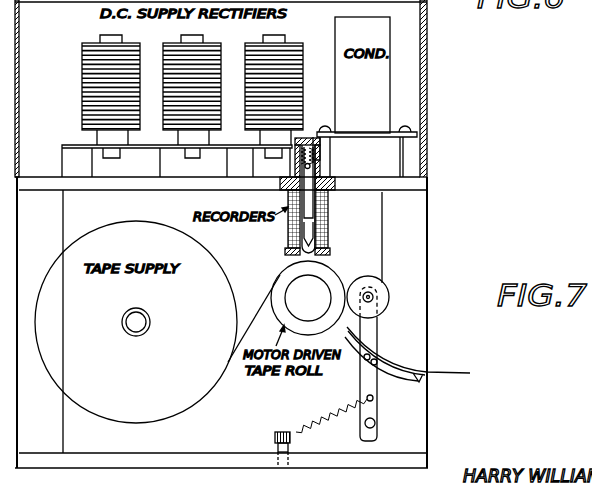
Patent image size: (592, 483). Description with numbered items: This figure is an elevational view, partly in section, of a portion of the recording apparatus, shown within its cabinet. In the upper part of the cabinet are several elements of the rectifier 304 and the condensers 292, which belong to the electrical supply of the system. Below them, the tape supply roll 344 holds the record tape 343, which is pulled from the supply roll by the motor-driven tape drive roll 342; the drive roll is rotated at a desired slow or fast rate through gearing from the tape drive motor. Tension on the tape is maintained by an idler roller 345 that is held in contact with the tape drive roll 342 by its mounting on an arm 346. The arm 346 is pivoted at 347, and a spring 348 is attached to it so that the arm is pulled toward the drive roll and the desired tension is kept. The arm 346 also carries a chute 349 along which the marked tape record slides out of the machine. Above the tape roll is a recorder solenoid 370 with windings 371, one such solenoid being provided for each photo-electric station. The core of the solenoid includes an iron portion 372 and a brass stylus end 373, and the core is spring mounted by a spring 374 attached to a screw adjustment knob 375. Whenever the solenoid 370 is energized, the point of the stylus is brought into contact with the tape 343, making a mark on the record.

The rectifier 304 is at (79, 88).
The condensers 292 is at (380, 79).
The screw adjustment knob 375 is at (303, 138).
The spring 374 is at (318, 162).
The iron portion 372 is at (313, 183).
The recorder solenoid 370 is at (333, 220).
The windings 371 is at (331, 231).
The brass stylus end 373 is at (306, 234).
The tape supply roll 344 is at (128, 222).
The tape 343 is at (266, 298).
The tape drive roll 342 is at (330, 275).
The idler roller 345 is at (377, 279).
The arm 346 is at (373, 327).
The pivot 347 is at (376, 423).
The spring 348 is at (326, 418).
The chute 349 is at (425, 382).